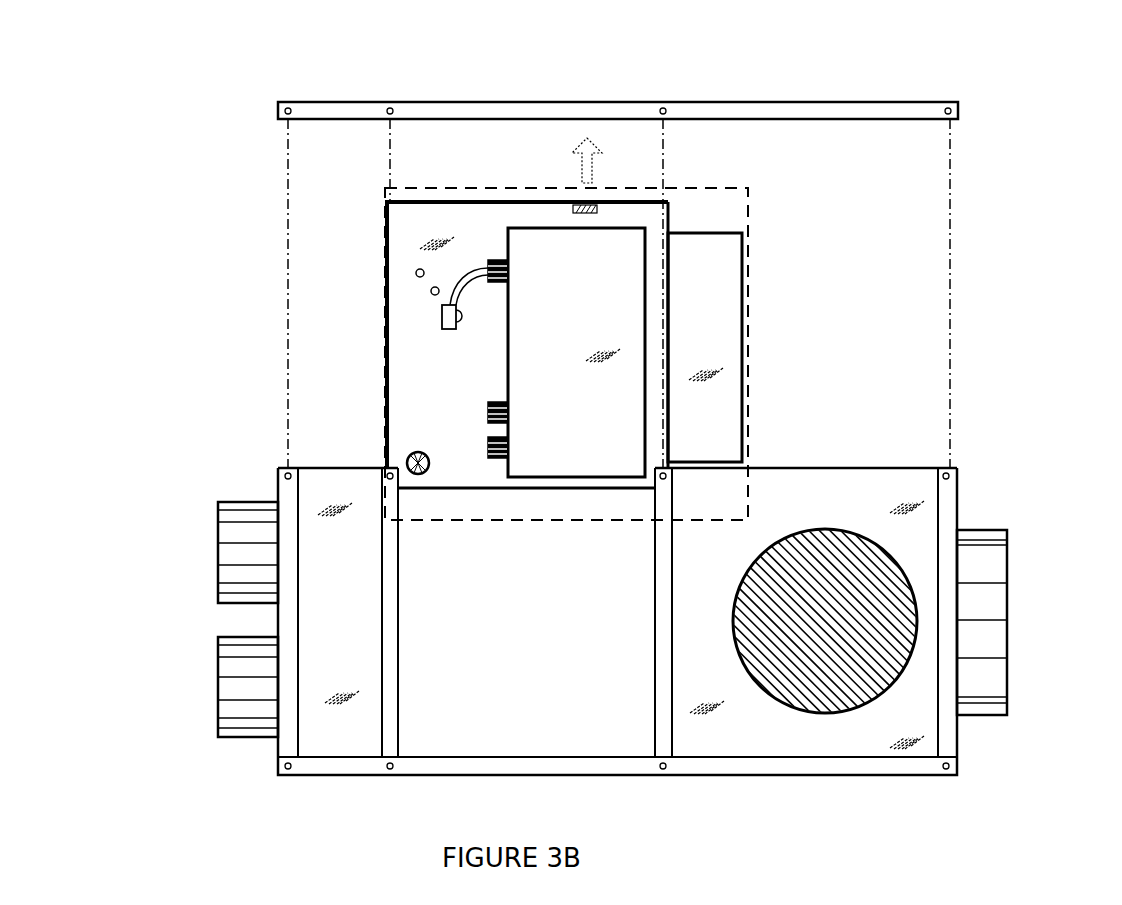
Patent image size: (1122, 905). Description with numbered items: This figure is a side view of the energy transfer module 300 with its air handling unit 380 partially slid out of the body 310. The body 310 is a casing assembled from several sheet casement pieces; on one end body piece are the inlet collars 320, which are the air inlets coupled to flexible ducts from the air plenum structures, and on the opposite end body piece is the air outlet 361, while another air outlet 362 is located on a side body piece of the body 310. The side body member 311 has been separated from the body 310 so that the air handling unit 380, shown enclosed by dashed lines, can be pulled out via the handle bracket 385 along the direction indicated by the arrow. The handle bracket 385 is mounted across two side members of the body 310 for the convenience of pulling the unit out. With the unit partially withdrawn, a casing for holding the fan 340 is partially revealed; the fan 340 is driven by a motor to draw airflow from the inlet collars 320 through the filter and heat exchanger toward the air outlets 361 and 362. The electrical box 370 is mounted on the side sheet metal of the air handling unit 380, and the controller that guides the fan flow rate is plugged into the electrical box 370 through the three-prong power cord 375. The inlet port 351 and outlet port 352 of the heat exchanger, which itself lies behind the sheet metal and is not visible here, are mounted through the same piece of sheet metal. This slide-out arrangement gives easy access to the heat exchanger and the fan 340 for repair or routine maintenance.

The energy transfer module 300 is at (985, 178).
The body 310 is at (905, 462).
The side body member 311 is at (795, 98).
The inlet collars 320 is at (217, 683).
The fan 340 is at (742, 300).
The inlet port 351 is at (416, 276).
The outlet port 352 is at (432, 294).
The air outlet 361 is at (1004, 622).
The air outlet 362 is at (830, 710).
The electrical box 370 is at (566, 352).
The 3-prong power cord 375 is at (450, 331).
The air handling unit 380 is at (748, 233).
The handle bracket 385 is at (573, 205).